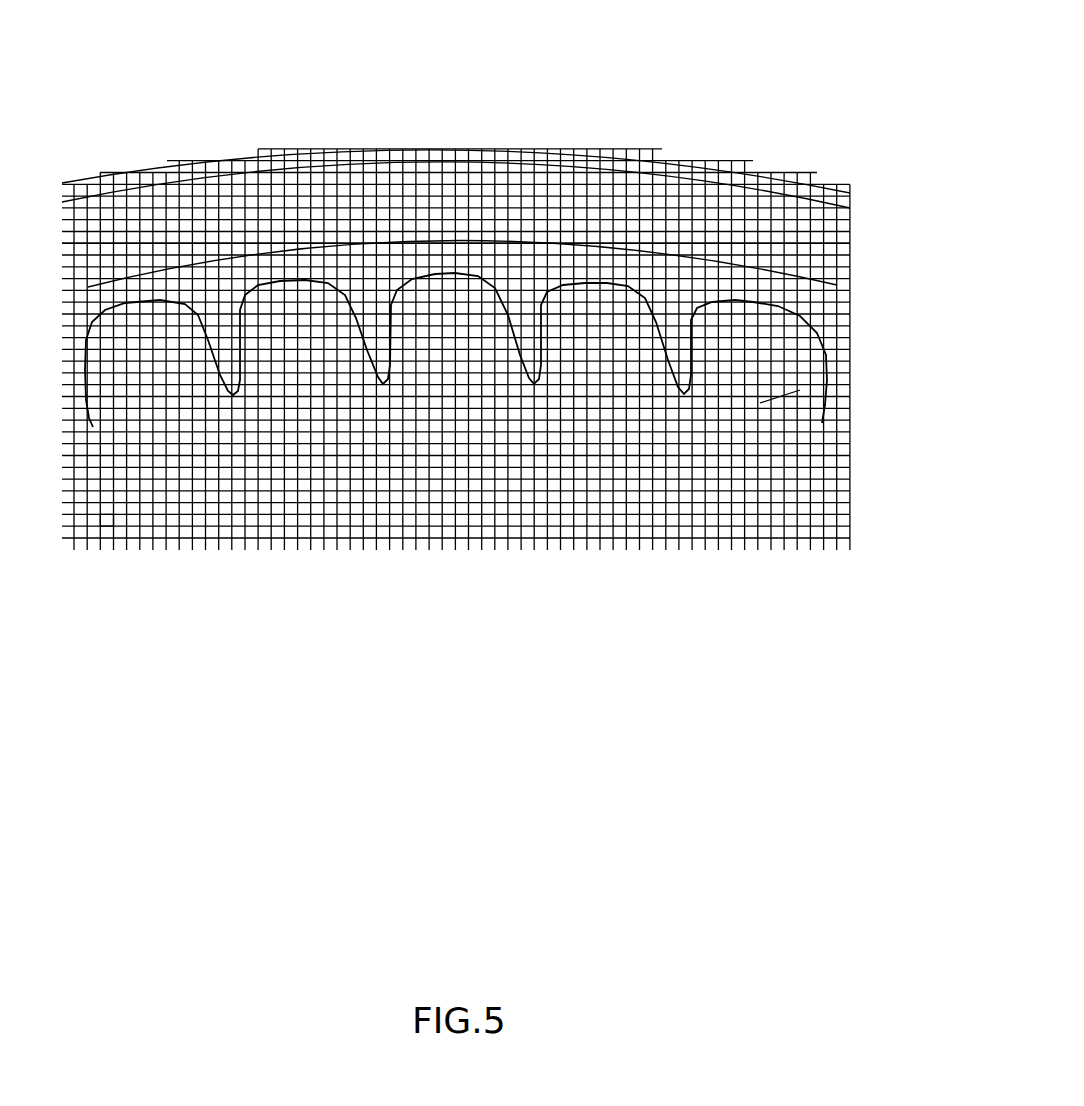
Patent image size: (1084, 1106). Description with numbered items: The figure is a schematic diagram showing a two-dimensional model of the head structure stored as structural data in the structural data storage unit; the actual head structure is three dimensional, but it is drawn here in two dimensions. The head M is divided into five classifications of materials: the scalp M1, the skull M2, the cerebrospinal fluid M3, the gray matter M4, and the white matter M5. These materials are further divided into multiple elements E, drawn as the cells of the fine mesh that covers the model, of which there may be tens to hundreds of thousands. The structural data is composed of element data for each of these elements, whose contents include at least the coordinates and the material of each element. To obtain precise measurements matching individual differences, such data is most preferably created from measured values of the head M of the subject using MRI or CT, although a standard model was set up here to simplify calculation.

The head M is at (471, 136).
The scalp M1 is at (848, 205).
The skull M2 is at (838, 240).
The cerebrospinal fluid M3 is at (837, 283).
The gray matter M4 is at (833, 345).
The white matter M5 is at (823, 387).
The element E is at (108, 520).